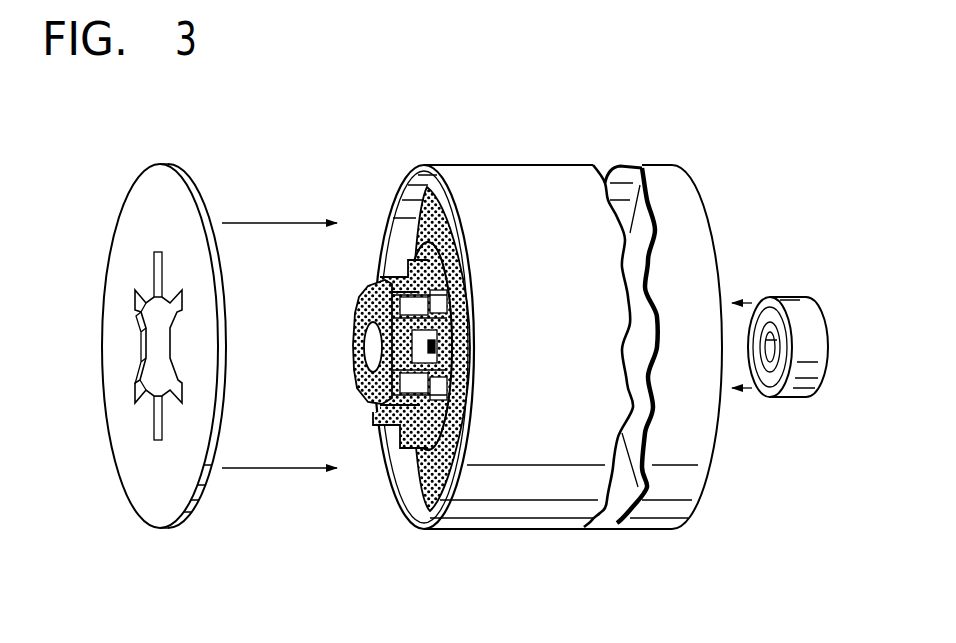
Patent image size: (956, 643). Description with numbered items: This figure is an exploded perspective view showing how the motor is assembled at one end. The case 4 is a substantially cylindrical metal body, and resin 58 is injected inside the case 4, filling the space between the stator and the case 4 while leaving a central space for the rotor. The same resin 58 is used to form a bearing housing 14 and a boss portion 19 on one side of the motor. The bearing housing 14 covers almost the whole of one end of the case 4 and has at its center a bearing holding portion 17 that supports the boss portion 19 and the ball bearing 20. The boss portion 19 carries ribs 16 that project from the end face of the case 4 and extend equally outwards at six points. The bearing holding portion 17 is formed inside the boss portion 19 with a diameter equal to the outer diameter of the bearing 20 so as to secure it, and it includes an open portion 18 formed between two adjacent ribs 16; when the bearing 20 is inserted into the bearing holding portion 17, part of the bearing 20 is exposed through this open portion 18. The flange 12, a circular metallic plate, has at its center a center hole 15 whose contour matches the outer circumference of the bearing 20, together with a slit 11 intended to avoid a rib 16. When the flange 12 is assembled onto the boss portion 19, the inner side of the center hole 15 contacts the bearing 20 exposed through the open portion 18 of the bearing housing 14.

The case 4 is at (687, 483).
The slit 11 is at (157, 268).
The flange 12 is at (133, 480).
The bearing housing 14 is at (421, 314).
The center hole 15 is at (162, 345).
The ribs 16 is at (387, 423).
The bearing holding portion 17 is at (420, 347).
The open portion 18 is at (450, 350).
The boss portion 19 is at (365, 387).
The ball bearing 20 is at (802, 305).
The resin 58 is at (428, 478).